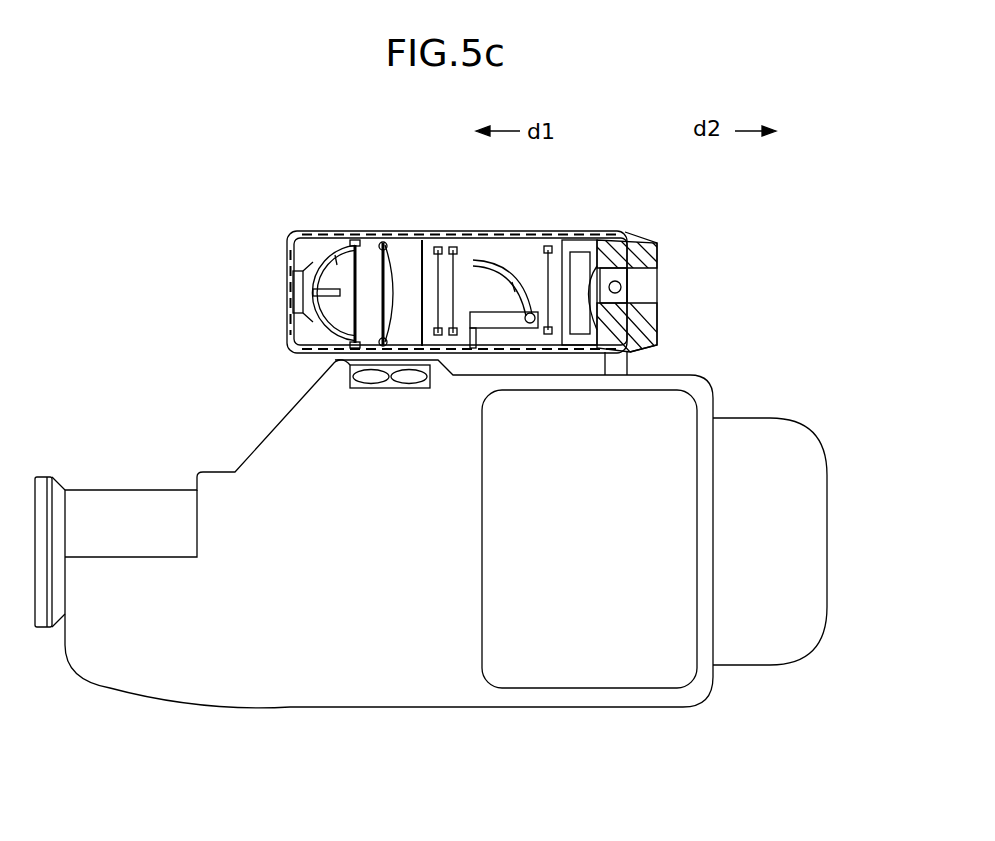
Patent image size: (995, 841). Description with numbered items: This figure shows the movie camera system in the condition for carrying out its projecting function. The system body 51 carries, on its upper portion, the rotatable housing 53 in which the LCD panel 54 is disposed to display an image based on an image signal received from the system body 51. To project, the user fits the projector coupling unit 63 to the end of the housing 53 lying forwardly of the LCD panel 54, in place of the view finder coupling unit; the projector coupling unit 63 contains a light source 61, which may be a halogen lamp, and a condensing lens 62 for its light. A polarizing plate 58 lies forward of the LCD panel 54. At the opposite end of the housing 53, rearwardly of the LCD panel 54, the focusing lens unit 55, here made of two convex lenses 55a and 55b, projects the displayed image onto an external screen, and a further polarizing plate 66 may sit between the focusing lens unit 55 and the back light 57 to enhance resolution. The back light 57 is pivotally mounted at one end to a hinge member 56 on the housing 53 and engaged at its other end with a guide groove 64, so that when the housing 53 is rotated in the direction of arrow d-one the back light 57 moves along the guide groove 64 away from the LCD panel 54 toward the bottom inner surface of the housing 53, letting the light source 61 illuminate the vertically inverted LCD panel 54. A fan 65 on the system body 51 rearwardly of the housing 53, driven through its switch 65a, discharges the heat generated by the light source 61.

The system body 51 is at (813, 447).
The housing 53 is at (517, 236).
The LCD panel 54 is at (457, 233).
The focusing lens unit 55 is at (640, 237).
The convex lens 55a is at (655, 268).
The convex lens 55b is at (647, 300).
The hinge member 56 is at (530, 335).
The back light 57 is at (490, 330).
The polarizing plate 58 is at (433, 238).
The light source 61 is at (337, 262).
The condensing lens 62 is at (393, 235).
The projector coupling unit 63 is at (280, 277).
The guide groove 64 is at (517, 285).
The fan 65 is at (415, 382).
The switch 65a is at (345, 360).
The polarizing plate 66 is at (548, 340).